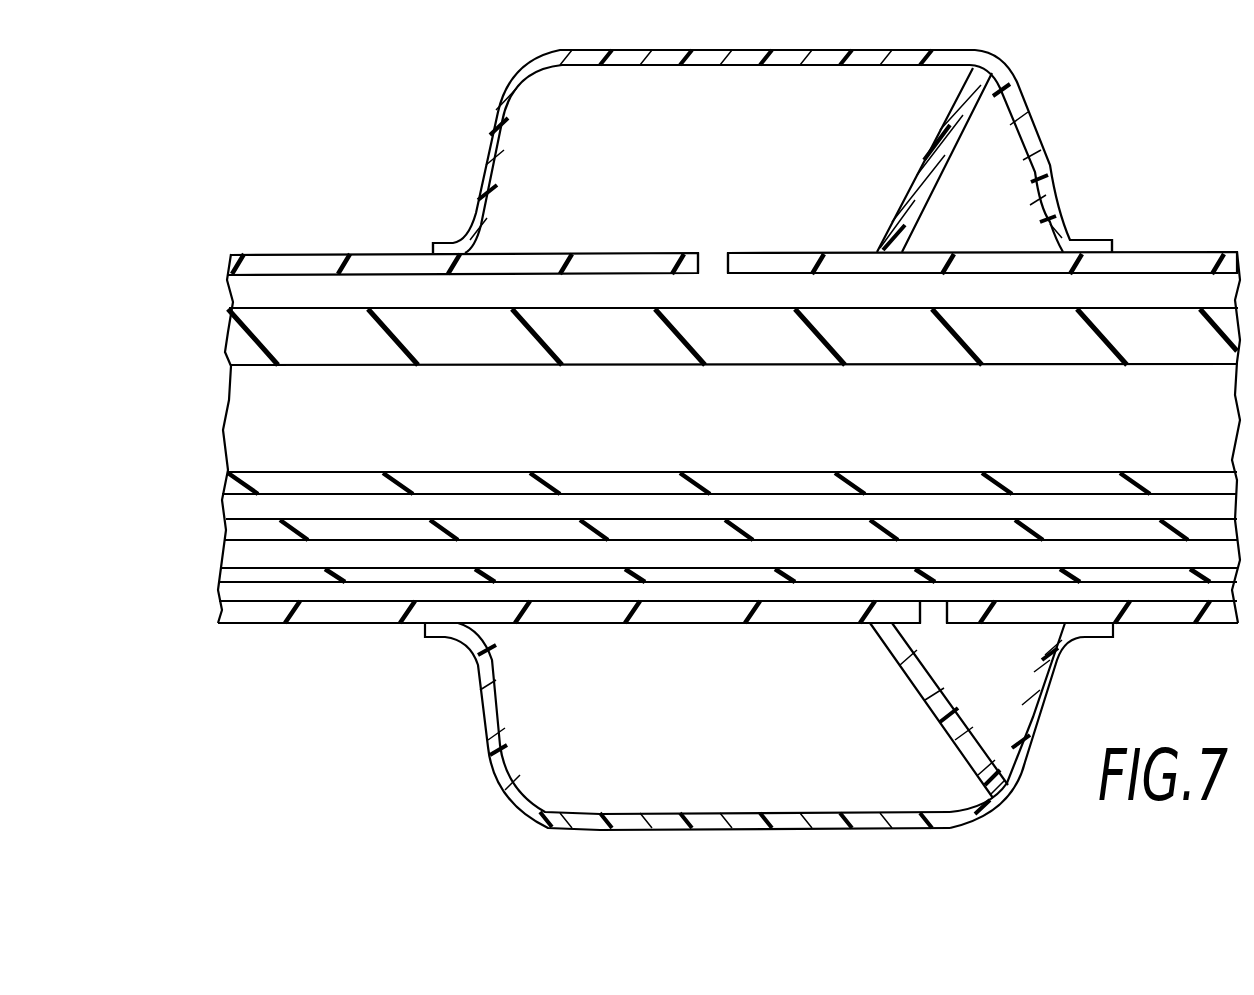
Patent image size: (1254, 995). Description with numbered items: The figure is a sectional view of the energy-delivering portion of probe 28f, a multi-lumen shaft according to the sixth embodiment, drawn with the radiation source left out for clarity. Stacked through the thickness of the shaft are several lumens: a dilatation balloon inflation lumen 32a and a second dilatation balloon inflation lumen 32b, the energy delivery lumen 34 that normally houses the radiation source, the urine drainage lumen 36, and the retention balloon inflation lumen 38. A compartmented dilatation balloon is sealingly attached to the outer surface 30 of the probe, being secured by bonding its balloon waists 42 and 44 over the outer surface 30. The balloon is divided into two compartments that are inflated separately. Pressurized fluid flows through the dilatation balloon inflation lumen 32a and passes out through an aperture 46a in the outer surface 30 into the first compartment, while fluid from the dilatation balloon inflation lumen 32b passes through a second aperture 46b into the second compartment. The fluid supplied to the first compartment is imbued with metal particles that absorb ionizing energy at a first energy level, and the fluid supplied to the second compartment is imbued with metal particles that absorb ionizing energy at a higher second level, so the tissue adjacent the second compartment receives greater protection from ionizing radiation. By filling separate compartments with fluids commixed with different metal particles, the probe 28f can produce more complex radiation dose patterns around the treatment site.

The probe 28f is at (243, 252).
The outer surface 30 is at (332, 253).
The dilatation balloon inflation lumen 32a is at (272, 293).
The dilatation balloon inflation lumen 32b is at (237, 590).
The energy delivery lumen 34 is at (233, 400).
The urine drainage lumen 36 is at (232, 505).
The retention balloon inflation lumen 38 is at (240, 555).
The balloon waist 42 is at (442, 240).
The balloon waist 44 is at (1073, 232).
The aperture 46a is at (711, 262).
The aperture 46b is at (931, 613).